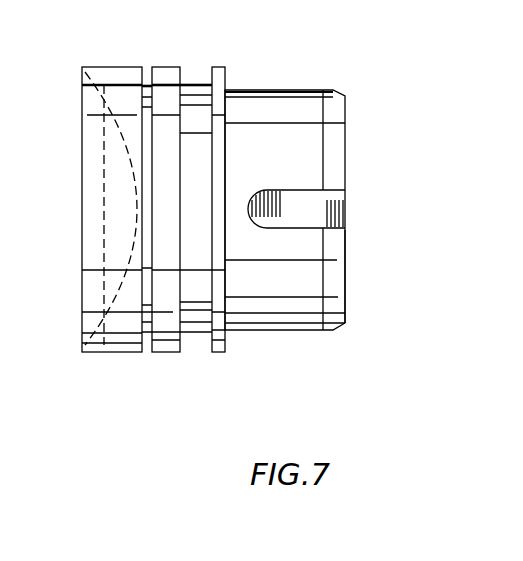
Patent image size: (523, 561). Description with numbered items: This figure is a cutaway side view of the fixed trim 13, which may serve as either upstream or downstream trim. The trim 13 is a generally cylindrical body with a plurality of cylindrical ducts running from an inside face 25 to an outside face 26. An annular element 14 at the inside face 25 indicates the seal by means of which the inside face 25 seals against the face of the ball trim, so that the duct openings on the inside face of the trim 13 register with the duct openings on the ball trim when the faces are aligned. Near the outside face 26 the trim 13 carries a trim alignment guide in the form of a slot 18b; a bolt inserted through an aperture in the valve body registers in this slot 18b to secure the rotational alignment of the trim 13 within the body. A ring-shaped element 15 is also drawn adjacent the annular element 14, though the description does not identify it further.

The trim 13 is at (277, 332).
The annular element 14 is at (84, 94).
The ring 15 is at (147, 72).
The trim alignment guide 18b is at (305, 198).
The inside face 25 is at (128, 253).
The outside face 26 is at (347, 272).